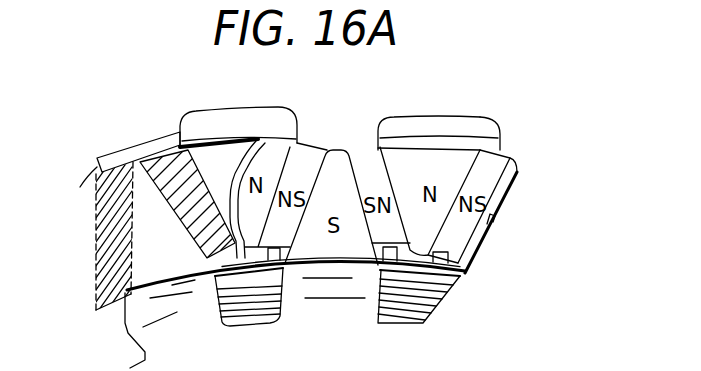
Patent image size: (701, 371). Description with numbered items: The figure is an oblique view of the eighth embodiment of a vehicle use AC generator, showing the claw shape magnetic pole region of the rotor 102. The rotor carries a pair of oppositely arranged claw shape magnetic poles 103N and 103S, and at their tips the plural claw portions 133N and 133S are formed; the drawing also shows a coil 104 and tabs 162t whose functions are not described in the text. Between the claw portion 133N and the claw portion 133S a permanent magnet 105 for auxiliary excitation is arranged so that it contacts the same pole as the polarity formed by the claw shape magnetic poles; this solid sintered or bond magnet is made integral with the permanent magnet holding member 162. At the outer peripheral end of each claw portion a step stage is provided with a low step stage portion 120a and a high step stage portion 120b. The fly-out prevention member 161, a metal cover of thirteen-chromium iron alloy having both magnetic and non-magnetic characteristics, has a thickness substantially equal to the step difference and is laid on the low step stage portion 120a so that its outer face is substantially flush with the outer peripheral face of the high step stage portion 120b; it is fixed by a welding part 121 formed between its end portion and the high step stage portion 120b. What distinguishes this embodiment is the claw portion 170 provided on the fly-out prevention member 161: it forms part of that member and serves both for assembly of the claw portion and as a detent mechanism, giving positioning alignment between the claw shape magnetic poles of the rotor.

The rotor 102 is at (448, 122).
The claw shape magnetic pole 103N is at (410, 123).
The claw shape magnetic pole 103S is at (320, 278).
The coil 104 is at (415, 300).
The permanent magnet 105 is at (317, 150).
The low step stage portion 120a is at (460, 168).
The high step stage portion 120b is at (483, 133).
The welding part 121 is at (227, 132).
The claw portion 133S is at (340, 153).
The claw portion 133N is at (442, 212).
The fly-out prevention member 161 is at (123, 177).
The permanent magnet holding member 162 is at (463, 270).
The holder tab 162t is at (498, 225).
The claw portion 170 is at (162, 137).